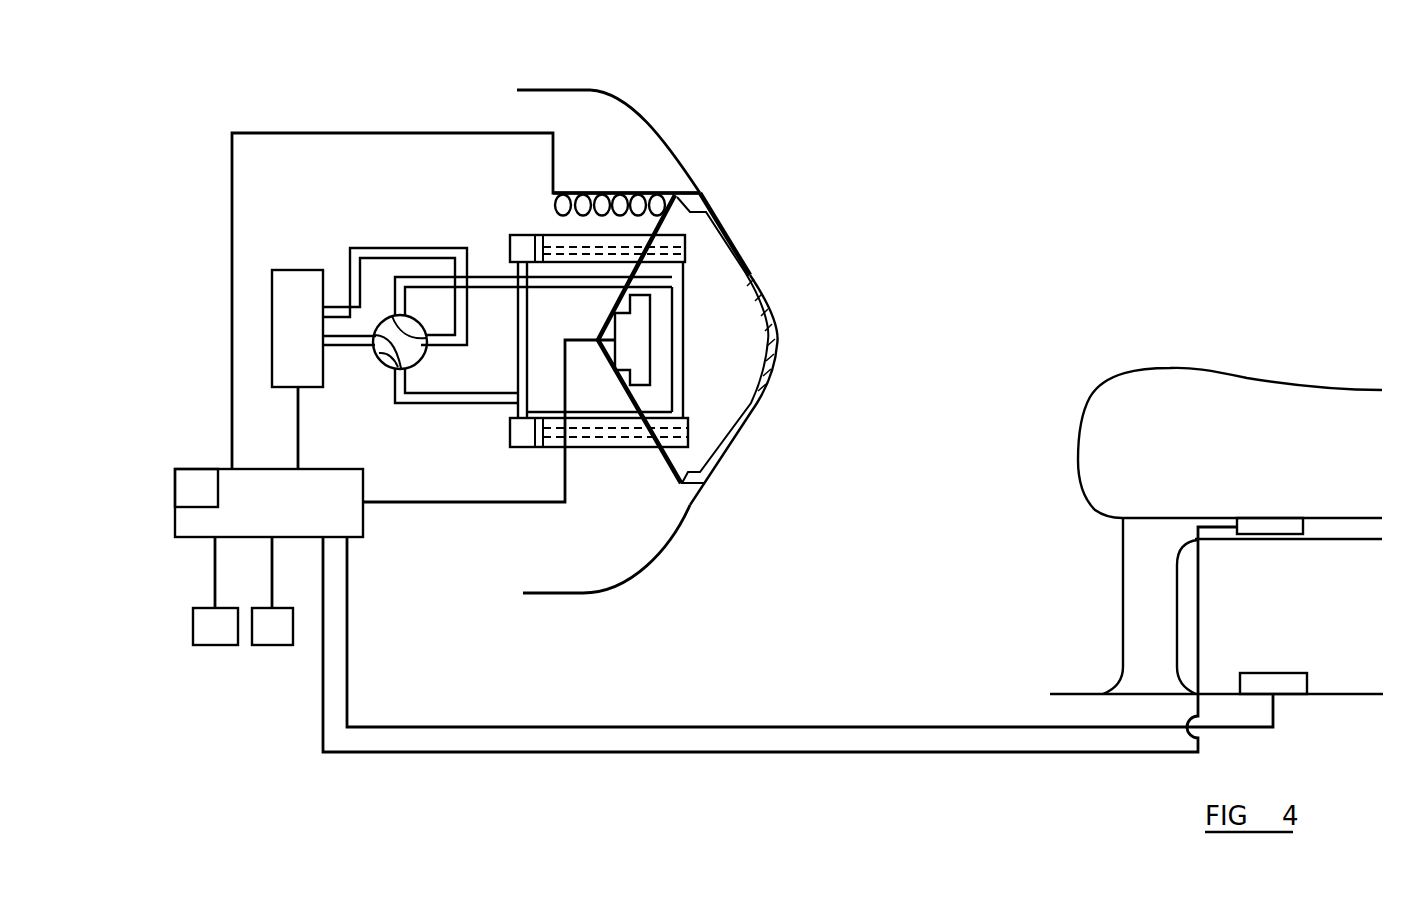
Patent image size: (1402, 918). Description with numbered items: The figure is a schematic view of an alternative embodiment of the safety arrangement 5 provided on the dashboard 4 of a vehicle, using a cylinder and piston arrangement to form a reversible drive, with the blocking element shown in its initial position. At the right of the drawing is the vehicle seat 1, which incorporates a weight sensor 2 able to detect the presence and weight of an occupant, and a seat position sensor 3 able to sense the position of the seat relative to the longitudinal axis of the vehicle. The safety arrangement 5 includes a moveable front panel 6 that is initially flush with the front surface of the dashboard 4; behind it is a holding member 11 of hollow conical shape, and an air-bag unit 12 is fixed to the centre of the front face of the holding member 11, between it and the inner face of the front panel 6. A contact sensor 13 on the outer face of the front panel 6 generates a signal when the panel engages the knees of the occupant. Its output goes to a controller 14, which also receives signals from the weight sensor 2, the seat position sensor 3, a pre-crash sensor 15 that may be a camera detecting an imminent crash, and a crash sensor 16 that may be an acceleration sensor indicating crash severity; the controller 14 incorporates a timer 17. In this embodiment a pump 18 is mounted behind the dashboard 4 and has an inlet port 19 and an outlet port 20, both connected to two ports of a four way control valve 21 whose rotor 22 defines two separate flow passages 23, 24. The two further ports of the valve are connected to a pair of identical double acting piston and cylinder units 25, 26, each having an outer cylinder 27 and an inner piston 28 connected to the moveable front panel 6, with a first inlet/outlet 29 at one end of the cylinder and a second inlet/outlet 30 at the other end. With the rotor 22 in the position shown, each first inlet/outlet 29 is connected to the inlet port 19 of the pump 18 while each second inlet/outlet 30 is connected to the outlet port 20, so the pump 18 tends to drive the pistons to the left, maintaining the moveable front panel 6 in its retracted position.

The vehicle seat 1 is at (1313, 338).
The weight sensor 2 is at (1275, 532).
The seat position sensor 3 is at (1297, 673).
The dashboard 4 is at (643, 105).
The safety arrangement 5 is at (499, 203).
The moveable front panel 6 is at (727, 233).
The holding member 11 is at (658, 453).
The air-bag unit 12 is at (645, 362).
The contact sensor 13 is at (772, 322).
The controller 14 is at (230, 480).
The pre-crash sensor 15 is at (215, 647).
The crash sensor 16 is at (262, 647).
The timer 17 is at (195, 480).
The pump 18 is at (280, 271).
The inlet port 19 is at (347, 343).
The outlet port 20 is at (382, 247).
The four way control valve 21 is at (373, 360).
The rotor 22 is at (427, 357).
The flow passage 23 is at (385, 365).
The flow passage 24 is at (440, 358).
The double acting piston and cylinder unit 25 is at (583, 193).
The double acting piston and cylinder unit 26 is at (600, 450).
The outer cylinder 27 is at (650, 193).
The inner piston 28 is at (703, 240).
The first inlet/outlet 29 is at (527, 367).
The second inlet/outlet 30 is at (680, 387).